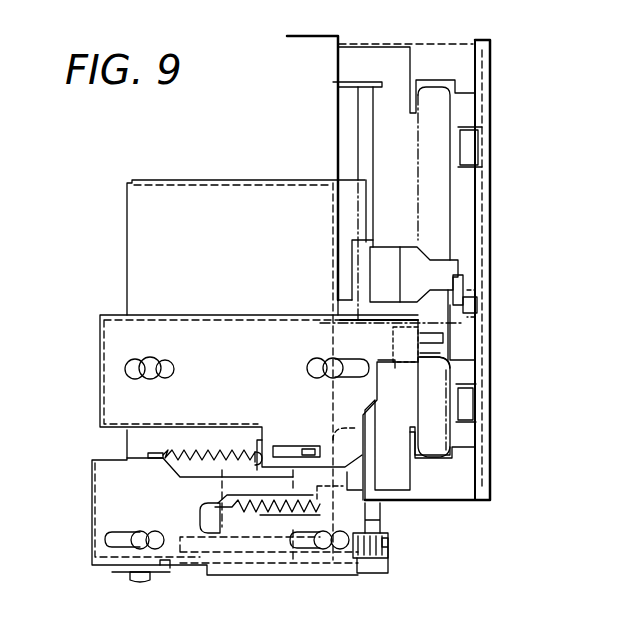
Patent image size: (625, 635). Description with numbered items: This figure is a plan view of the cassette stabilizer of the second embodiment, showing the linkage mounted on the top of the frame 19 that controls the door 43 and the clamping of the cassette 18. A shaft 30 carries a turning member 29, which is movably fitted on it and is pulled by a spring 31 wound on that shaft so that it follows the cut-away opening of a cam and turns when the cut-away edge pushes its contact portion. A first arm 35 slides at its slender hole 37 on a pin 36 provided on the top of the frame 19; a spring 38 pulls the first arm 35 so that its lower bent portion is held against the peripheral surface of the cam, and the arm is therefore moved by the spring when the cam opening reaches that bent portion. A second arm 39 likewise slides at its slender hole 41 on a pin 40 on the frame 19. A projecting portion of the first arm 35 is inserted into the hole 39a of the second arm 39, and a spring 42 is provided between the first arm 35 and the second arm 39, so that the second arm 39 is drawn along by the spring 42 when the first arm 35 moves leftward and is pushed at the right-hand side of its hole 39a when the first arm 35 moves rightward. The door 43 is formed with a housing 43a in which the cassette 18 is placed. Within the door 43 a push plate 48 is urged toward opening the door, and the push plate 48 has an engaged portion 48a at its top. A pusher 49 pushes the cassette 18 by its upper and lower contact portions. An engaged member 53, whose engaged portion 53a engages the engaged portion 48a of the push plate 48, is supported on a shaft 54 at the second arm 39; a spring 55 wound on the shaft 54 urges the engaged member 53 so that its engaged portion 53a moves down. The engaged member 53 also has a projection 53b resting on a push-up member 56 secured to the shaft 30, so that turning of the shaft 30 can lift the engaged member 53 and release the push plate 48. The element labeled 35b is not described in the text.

The cassette 18 is at (442, 437).
The frame 19 is at (137, 260).
The turning member 29 is at (377, 577).
The shaft 30 is at (370, 142).
The spring 31 is at (390, 558).
The first arm 35 is at (105, 497).
The stop block 35b is at (308, 447).
The pin 36 is at (135, 548).
The slender hole 37 is at (110, 543).
The spring 38 is at (260, 517).
The second arm 39 is at (98, 372).
The hole 39a is at (280, 440).
The pin 40 is at (148, 360).
The slender hole 41 is at (168, 353).
The spring 42 is at (212, 452).
The door 43 is at (482, 478).
The housing 43a is at (442, 458).
The push plate 48 is at (483, 235).
The engaged portion 48a is at (480, 318).
The pusher 49 is at (465, 147).
The engaged member 53 is at (460, 342).
The engaged portion 53a is at (485, 308).
The projection 53b is at (463, 282).
The shaft 54 is at (412, 368).
The spring 55 is at (470, 367).
The push-up member 56 is at (388, 255).